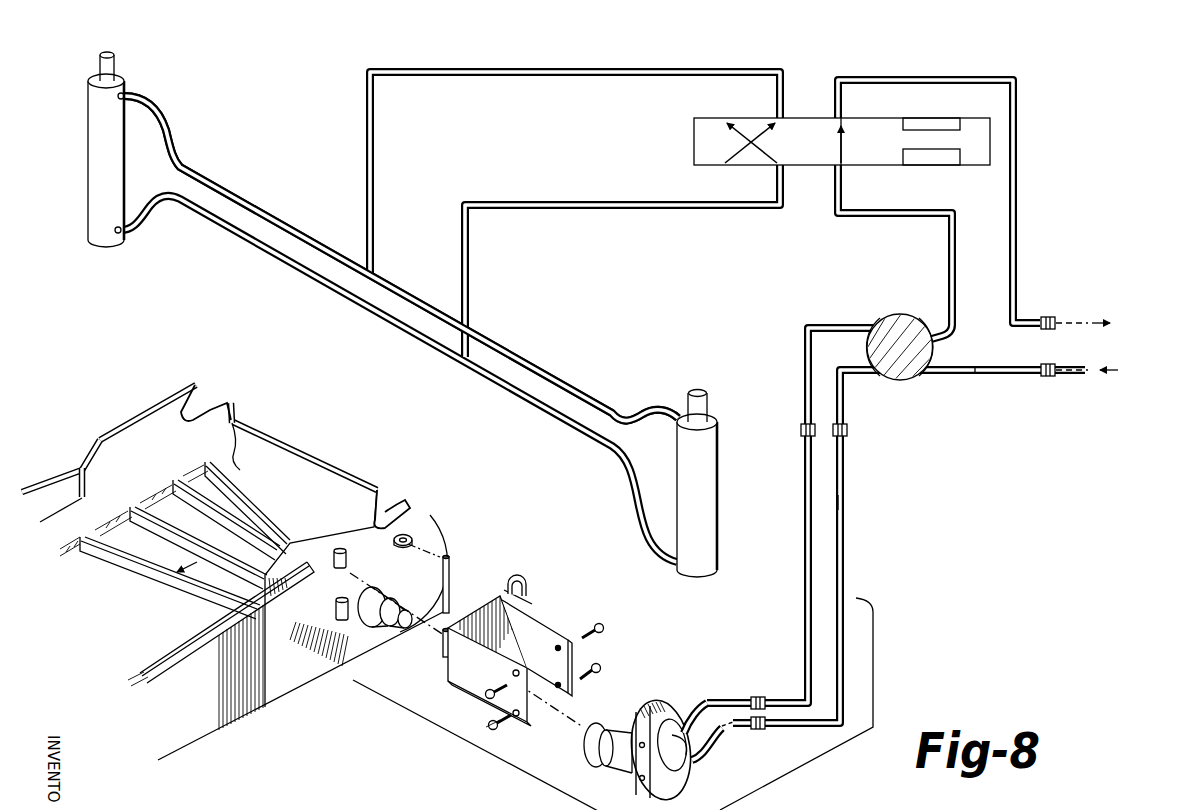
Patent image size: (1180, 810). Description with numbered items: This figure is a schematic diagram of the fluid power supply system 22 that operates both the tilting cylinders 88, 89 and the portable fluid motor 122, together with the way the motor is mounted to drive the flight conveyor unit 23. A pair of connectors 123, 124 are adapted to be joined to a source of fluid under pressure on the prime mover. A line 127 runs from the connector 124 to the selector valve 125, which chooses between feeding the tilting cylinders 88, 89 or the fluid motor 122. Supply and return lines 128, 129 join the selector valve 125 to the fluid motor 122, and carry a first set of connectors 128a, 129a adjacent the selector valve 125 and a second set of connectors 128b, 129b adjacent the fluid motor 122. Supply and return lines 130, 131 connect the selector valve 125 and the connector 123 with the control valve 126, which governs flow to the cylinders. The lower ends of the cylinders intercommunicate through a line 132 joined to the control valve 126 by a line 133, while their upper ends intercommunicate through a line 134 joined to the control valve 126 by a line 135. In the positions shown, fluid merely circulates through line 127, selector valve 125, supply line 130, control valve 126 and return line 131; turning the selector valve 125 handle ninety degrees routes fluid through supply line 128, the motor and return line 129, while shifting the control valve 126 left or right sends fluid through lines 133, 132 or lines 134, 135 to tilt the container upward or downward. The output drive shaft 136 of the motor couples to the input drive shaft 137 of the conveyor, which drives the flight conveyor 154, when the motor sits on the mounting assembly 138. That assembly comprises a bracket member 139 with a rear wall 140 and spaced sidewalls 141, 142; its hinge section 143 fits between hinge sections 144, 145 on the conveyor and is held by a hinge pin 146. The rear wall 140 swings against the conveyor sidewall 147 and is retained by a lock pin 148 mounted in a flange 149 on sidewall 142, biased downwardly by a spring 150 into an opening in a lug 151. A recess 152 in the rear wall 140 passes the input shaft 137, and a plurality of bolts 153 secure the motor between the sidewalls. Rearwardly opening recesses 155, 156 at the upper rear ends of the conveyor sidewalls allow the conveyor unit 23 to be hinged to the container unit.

The power supply system 22 is at (853, 498).
The flight conveyor unit 23 is at (150, 398).
The tilting cylinder 88 is at (708, 501).
The tilting cylinder 89 is at (88, 174).
The portable fluid motor 122 is at (660, 704).
The connector 123 is at (1036, 318).
The connector 124 is at (1042, 378).
The selector valve 125 is at (895, 320).
The control valve 126 is at (800, 170).
The line 127 is at (984, 378).
The supply line 128 is at (846, 548).
The connector 128a is at (848, 430).
The connector 128b is at (748, 734).
The return line 129 is at (803, 620).
The connector 129a is at (800, 428).
The connector 129b is at (768, 693).
The supply line 130 is at (956, 248).
The return line 131 is at (1019, 228).
The line 132 is at (409, 337).
The line 133 is at (612, 210).
The line 134 is at (524, 360).
The line 135 is at (546, 82).
The output drive shaft 136 is at (597, 760).
The input drive shaft 137 is at (376, 634).
The mounting assembly 138 is at (488, 725).
The bracket member 139 is at (553, 626).
The rear wall 140 is at (482, 600).
The sidewall 141 is at (530, 705).
The sidewall 142 is at (572, 682).
The hinge section 143 is at (446, 662).
The hinge section 144 is at (348, 561).
The hinge section 145 is at (334, 615).
The hinge pin 146 is at (450, 560).
The sidewall 147 is at (340, 680).
The lock pin 148 is at (530, 587).
The flange 149 is at (538, 605).
The spring 150 is at (544, 667).
The lug 151 is at (416, 536).
The recess 152 is at (470, 700).
The bolts 153 is at (605, 630).
The flight conveyor 154 is at (180, 645).
The recess 155 is at (202, 410).
The recess 156 is at (392, 512).